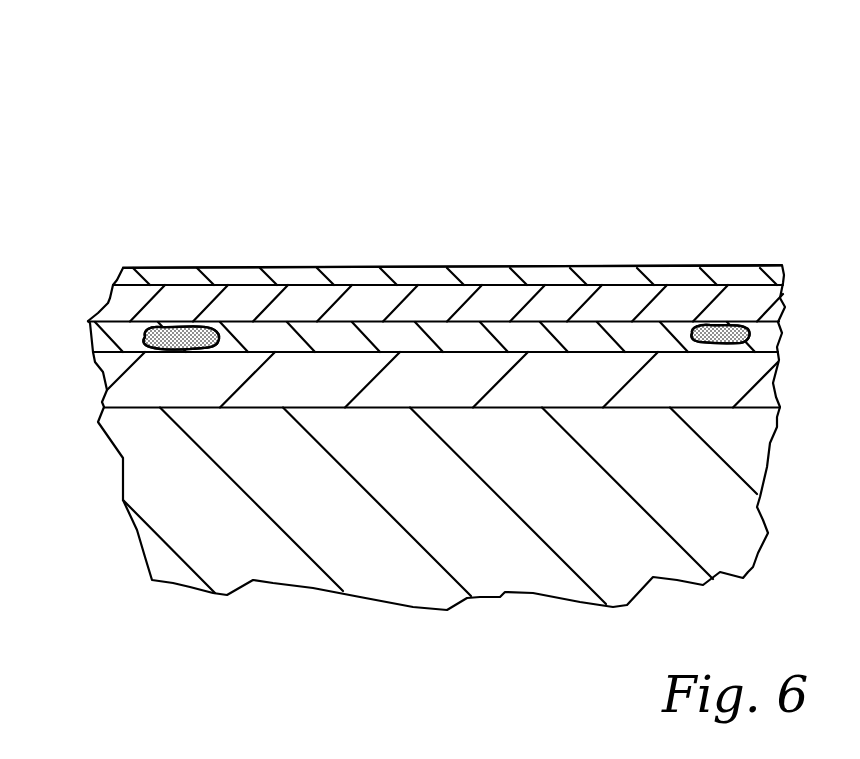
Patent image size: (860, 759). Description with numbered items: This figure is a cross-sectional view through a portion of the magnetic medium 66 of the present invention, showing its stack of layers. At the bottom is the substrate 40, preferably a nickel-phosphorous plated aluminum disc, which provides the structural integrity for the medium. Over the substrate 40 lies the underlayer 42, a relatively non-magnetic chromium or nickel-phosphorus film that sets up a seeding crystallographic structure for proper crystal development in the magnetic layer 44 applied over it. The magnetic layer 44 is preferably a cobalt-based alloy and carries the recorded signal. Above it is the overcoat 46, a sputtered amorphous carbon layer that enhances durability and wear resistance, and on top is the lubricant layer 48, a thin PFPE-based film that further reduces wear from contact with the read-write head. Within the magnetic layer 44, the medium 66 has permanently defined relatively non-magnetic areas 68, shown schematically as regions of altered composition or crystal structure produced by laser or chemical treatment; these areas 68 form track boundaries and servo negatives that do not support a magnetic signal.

The magnetic medium 66 is at (58, 118).
The substrate 40 is at (138, 467).
The underlayer 42 is at (102, 372).
The magnetic layer 44 is at (108, 334).
The overcoat 46 is at (118, 296).
The lubricant layer 48 is at (122, 271).
The permanently defined relatively non-magnetic areas 68 is at (143, 337).